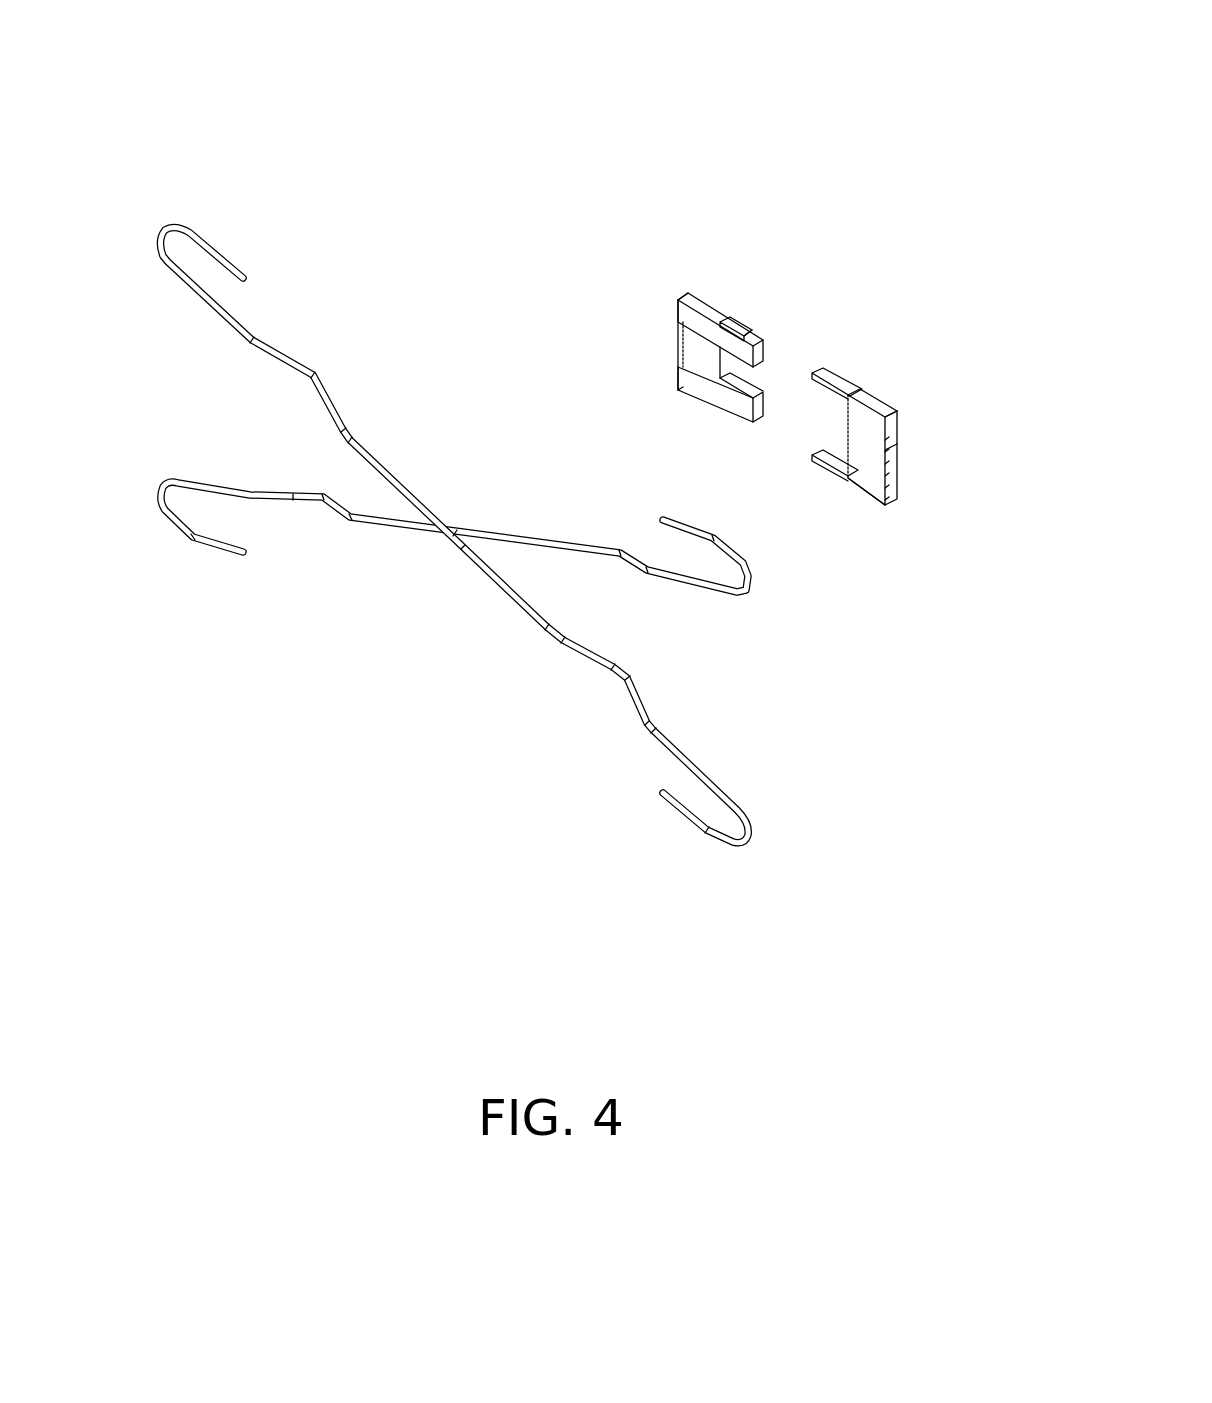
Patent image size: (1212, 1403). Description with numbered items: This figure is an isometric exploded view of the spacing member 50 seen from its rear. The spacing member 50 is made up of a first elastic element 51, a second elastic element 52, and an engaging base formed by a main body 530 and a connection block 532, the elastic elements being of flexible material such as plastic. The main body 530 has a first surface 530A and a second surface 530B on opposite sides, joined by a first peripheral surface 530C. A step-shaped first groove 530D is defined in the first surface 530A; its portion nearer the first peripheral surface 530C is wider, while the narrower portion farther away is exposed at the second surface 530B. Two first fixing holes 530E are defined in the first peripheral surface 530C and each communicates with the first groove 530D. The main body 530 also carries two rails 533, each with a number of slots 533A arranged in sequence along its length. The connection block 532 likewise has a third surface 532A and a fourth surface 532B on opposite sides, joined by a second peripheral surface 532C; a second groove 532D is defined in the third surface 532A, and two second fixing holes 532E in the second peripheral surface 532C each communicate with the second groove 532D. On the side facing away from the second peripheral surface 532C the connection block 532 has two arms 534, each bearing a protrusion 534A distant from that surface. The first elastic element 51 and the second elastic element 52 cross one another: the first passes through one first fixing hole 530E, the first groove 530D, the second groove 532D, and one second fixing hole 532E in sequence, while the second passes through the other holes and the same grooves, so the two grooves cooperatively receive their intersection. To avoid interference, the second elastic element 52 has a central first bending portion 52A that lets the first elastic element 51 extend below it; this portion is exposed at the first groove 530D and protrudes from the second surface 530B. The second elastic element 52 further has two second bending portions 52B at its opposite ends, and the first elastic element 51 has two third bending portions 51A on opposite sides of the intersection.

The spacing member 50 is at (626, 98).
The first elastic element 51 is at (454, 562).
The third bending portion 51A is at (293, 500).
The second elastic element 52 is at (429, 535).
The first bending portion 52A is at (456, 528).
The second bending portion 52B is at (316, 375).
The main body 530 is at (682, 330).
The first surface 530A is at (677, 301).
The second surface 530B is at (760, 283).
The first peripheral surface 530C is at (677, 377).
The first groove 530D is at (745, 380).
The first fixing hole 530E is at (679, 317).
The rail 533 is at (732, 318).
The slot 533A is at (742, 324).
The connection block 532 is at (882, 456).
The third surface 532A is at (884, 418).
The fourth surface 532B is at (875, 392).
The second peripheral surface 532C is at (898, 462).
The second groove 532D is at (870, 465).
The second fixing hole 532E is at (889, 437).
The arm 534 is at (843, 377).
The protrusion 534A is at (812, 462).